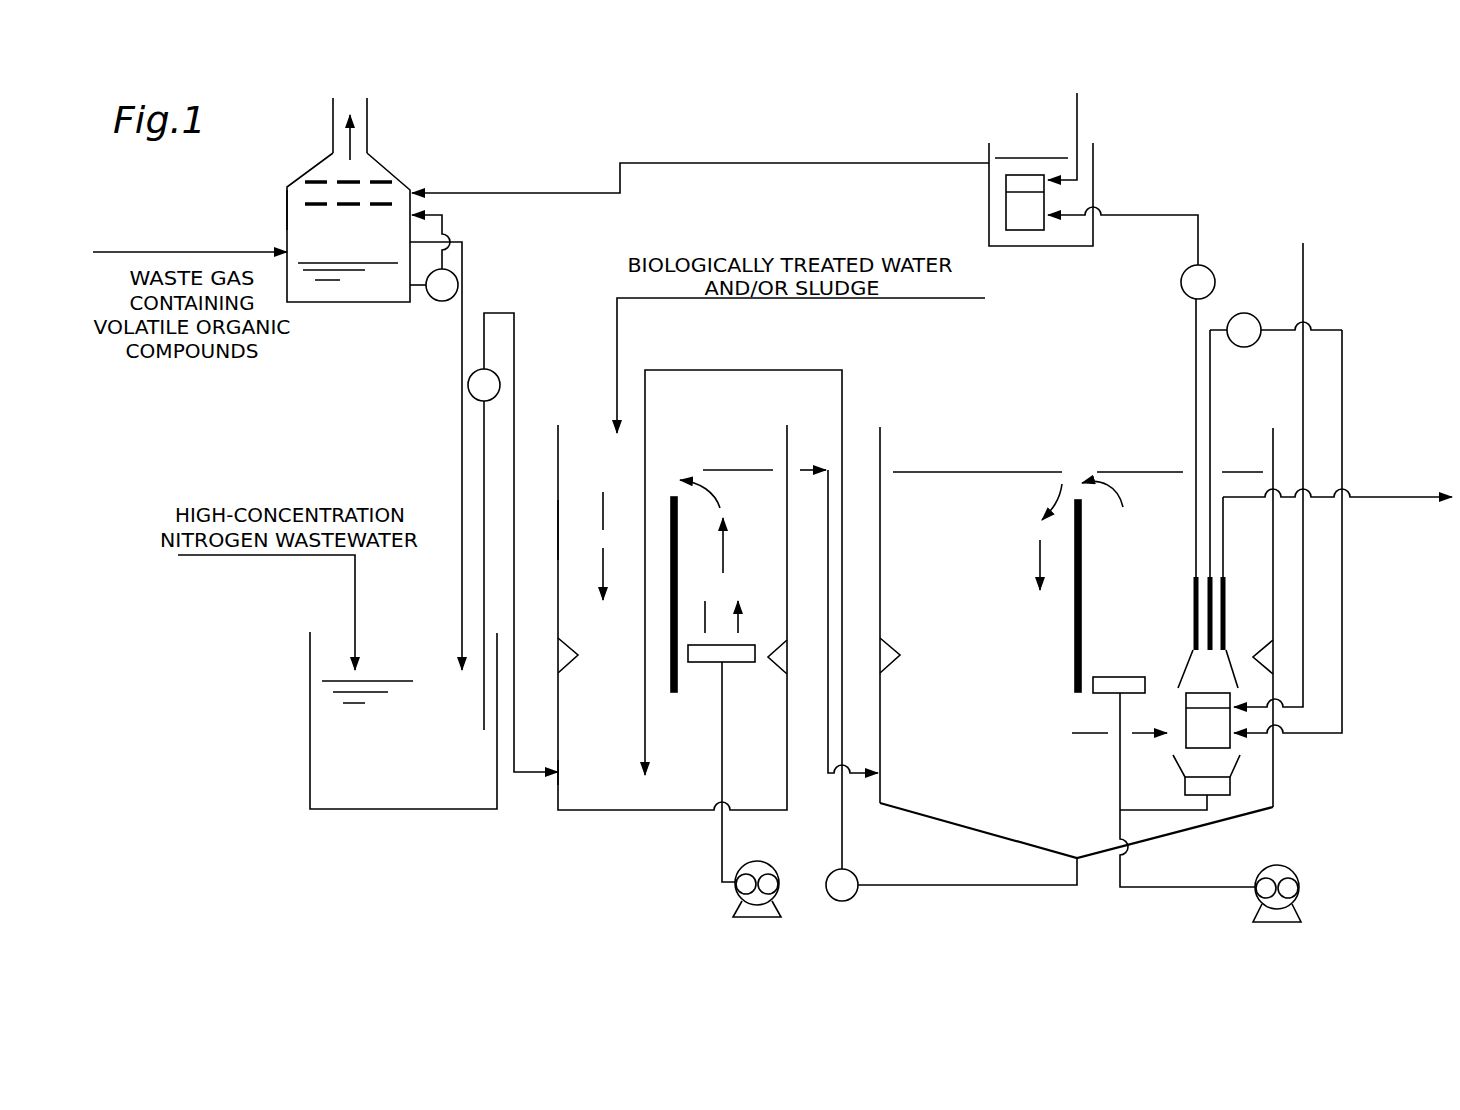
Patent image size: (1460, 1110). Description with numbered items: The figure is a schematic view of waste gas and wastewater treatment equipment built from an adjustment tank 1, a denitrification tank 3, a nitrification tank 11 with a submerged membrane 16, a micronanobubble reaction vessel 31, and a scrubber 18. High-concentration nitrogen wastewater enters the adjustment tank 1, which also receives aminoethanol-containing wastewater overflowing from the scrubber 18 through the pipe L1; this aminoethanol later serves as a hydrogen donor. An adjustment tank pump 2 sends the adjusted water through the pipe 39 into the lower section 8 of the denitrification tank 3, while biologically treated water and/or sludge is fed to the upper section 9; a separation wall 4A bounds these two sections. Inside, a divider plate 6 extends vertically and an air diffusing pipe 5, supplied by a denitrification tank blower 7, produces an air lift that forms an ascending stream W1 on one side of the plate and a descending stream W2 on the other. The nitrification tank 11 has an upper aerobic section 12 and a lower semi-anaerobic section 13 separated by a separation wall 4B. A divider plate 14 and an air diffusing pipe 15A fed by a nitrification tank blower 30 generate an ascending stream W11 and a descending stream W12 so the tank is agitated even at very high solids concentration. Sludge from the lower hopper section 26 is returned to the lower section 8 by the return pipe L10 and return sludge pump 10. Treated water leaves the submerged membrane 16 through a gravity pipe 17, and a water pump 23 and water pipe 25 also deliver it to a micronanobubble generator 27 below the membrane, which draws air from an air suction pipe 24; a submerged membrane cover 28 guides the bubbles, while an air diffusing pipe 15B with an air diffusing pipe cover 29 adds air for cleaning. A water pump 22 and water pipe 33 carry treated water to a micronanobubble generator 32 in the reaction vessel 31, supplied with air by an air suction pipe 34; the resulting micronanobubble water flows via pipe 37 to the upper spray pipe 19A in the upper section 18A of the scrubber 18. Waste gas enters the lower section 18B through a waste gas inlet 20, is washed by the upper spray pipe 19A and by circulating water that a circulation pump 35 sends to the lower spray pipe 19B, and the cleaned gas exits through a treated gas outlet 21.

The adjustment tank 1 is at (398, 814).
The adjustment tank pump 2 is at (489, 370).
The denitrification tank 3 is at (578, 813).
The separation wall 4A is at (787, 655).
The separation wall 4B is at (1268, 656).
The air diffusing pipe 5 is at (742, 665).
The divider plate 6 is at (668, 556).
The denitrification tank blower 7 is at (773, 866).
The lower section 8 is at (562, 742).
The upper section 9 is at (558, 535).
The return sludge pump 10 is at (854, 897).
The nitrification tank 11 is at (1252, 817).
The aerobic section 12 is at (932, 472).
The semi-anaerobic section 13 is at (887, 733).
The divider plate 14 is at (1076, 535).
The air diffusing pipe 15A is at (1118, 677).
The air diffusing pipe 15B is at (1222, 788).
The submerged membrane 16 is at (1223, 595).
The gravity pipe 17 is at (1327, 497).
The scrubber 18 is at (352, 306).
The upper section 18A is at (293, 205).
The lower section 18B is at (326, 300).
The upper spray pipe 19A is at (318, 178).
The lower spray pipe 19B is at (313, 209).
The waste gas inlet 20 is at (160, 250).
The treated gas outlet 21 is at (370, 125).
The water pump 22 is at (1212, 273).
The water pump 23 is at (1256, 343).
The air suction pipe 24 is at (1305, 285).
The water pipe 25 is at (1343, 392).
The lower hopper section 26 is at (1072, 838).
The micronanobubble generator 27 is at (1185, 718).
The submerged membrane cover 28 is at (1184, 662).
The air diffusing pipe cover 29 is at (1240, 765).
The nitrification tank blower 30 is at (1292, 866).
The micronanobubble reaction vessel 31 is at (1098, 150).
The micronanobubble generator 32 is at (1030, 183).
The water pipe 33 is at (1178, 214).
The air suction pipe 34 is at (1080, 122).
The circulation pump 35 is at (440, 303).
The pipe 37 is at (745, 160).
The pipe 39 is at (518, 350).
The pipe L1 is at (463, 270).
The return pipe L10 is at (958, 888).
The ascending stream W1 is at (725, 556).
The descending stream W2 is at (603, 493).
The ascending stream W11 is at (1120, 500).
The descending stream W12 is at (1038, 553).